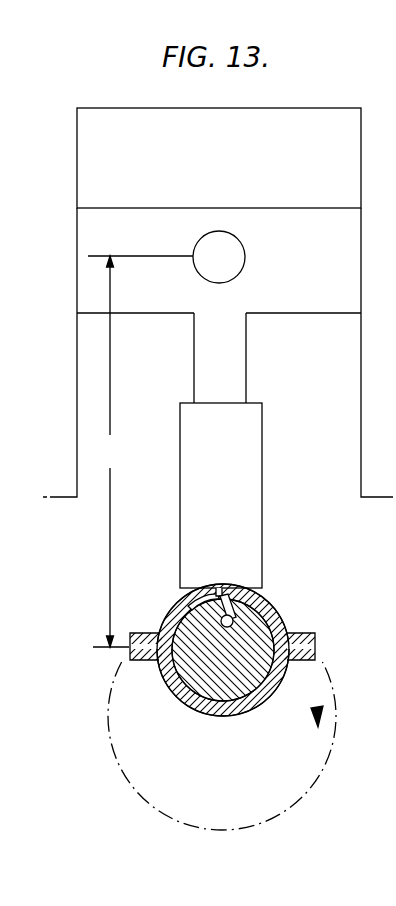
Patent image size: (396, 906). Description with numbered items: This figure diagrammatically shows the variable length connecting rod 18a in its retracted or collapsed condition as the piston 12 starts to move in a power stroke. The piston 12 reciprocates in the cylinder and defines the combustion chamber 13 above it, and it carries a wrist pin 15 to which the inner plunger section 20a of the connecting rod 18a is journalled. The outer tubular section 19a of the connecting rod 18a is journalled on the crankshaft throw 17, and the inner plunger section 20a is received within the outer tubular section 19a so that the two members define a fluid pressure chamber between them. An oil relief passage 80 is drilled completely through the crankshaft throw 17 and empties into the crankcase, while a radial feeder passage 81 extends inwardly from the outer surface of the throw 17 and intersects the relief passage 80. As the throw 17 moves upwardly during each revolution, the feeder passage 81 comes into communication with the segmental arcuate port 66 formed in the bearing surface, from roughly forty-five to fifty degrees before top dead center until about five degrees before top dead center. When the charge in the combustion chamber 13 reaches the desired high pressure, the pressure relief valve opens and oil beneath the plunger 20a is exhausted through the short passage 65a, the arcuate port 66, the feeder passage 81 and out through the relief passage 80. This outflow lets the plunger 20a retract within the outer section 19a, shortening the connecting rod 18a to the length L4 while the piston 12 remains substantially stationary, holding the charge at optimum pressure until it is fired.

The combustion chamber 13 is at (238, 167).
The piston 12 is at (308, 261).
The wrist pin 15 is at (228, 264).
The shortened connecting rod length L4 is at (111, 451).
The inner plunger section 20a is at (246, 358).
The connecting rod 18a is at (265, 436).
The outer tubular section 19a is at (247, 515).
The crankshaft throw 17 is at (203, 677).
The segmental arcuate port 66 is at (191, 602).
The short passage 65a is at (221, 588).
The radial feeder passage 81 is at (242, 605).
The oil relief passage 80 is at (233, 620).